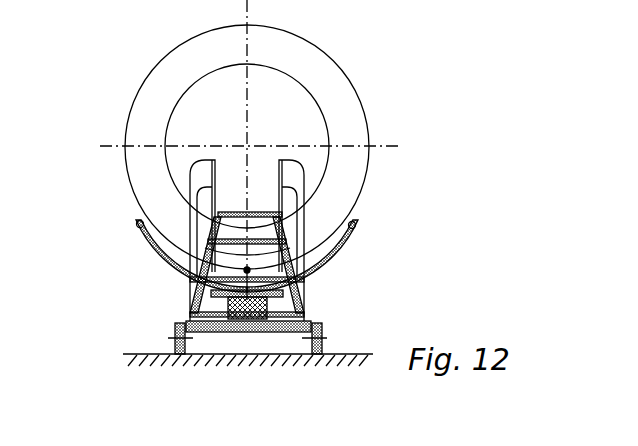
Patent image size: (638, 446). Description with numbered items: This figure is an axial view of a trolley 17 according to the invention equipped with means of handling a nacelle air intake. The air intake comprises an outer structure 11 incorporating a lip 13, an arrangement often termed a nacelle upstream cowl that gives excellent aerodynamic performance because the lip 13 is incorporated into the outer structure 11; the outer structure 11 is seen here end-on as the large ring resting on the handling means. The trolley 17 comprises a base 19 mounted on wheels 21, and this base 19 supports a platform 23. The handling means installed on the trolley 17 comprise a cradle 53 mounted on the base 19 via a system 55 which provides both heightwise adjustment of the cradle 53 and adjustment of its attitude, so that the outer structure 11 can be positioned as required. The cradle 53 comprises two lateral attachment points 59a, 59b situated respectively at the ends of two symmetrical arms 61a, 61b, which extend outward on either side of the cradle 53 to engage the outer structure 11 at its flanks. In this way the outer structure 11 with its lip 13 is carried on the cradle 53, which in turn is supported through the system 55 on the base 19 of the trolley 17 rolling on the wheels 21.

The outer structure 11 is at (337, 58).
The lip 13 is at (340, 107).
The trolley 17 is at (313, 163).
The base 19 is at (213, 333).
The wheels 21 is at (175, 340).
The platform 23 is at (235, 212).
The cradle 53 is at (325, 297).
The system 55 is at (262, 333).
The lateral attachment point 59a is at (133, 221).
The lateral attachment point 59b is at (350, 222).
The arm 61a is at (142, 252).
The arm 61b is at (352, 257).